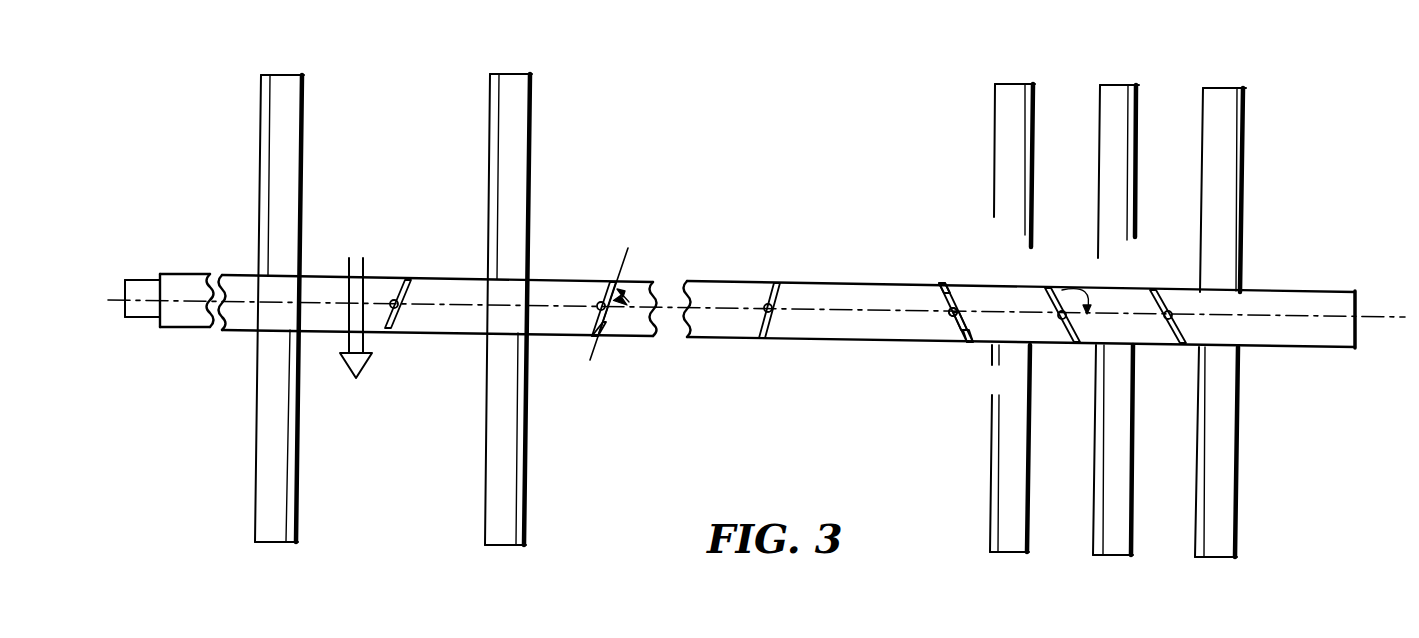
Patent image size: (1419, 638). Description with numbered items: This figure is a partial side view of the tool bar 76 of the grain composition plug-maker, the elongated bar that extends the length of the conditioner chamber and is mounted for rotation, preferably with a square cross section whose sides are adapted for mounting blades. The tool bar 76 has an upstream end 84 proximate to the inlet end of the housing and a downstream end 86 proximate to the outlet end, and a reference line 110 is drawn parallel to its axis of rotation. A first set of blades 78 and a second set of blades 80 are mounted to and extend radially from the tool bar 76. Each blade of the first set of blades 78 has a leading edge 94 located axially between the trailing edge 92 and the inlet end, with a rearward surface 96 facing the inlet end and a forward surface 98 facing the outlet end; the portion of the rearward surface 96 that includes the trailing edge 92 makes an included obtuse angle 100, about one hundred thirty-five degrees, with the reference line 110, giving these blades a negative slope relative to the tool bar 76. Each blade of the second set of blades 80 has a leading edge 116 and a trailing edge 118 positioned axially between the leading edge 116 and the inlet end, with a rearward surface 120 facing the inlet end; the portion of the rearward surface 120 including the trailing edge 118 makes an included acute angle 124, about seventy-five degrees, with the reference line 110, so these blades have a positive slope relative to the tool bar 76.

The tool bar 76 is at (332, 278).
The first set of blades 78 is at (941, 283).
The second set of blades 80 is at (595, 291).
The upstream end 84 is at (1346, 290).
The downstream end 86 is at (162, 272).
The trailing edge 92 is at (946, 290).
The leading edge 94 is at (960, 333).
The rearward surface 96 is at (955, 302).
The forward surface 98 is at (957, 318).
The included obtuse angle 100 is at (1093, 288).
The reference line 110 is at (143, 300).
The leading edge 116 is at (597, 316).
The trailing edge 118 is at (637, 292).
The rearward surface 120 is at (607, 326).
The included acute angle 124 is at (629, 302).